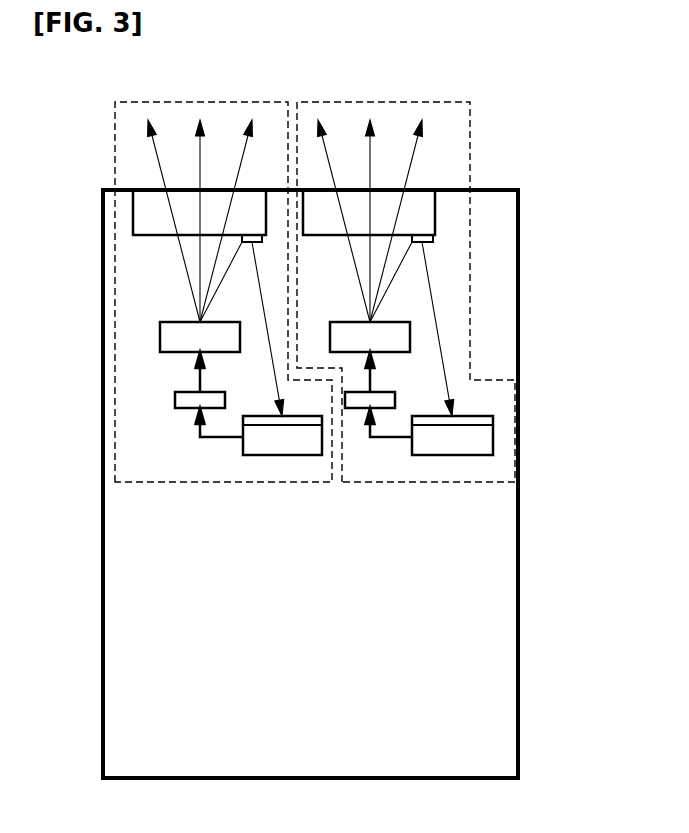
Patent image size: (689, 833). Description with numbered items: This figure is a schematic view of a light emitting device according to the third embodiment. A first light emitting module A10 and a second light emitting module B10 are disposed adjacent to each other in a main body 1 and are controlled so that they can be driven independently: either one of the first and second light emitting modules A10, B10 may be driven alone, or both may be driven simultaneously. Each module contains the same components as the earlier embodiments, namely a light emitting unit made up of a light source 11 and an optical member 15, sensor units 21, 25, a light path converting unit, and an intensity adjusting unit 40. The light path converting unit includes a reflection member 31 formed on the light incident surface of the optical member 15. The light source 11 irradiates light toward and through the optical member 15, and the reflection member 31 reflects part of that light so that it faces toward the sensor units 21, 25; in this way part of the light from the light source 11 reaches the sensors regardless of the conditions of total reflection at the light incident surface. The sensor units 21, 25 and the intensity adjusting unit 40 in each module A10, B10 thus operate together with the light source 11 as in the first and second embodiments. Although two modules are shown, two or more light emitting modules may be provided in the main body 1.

The main body 1 is at (518, 610).
The first light emitting module A10 is at (115, 153).
The second light emitting module B10 is at (470, 131).
The optical member 15 is at (435, 212).
The reflection member 31 is at (425, 242).
The light source 11 is at (410, 337).
The intensity adjusting unit 40 is at (353, 413).
The sensor unit 21 is at (493, 445).
The sensor unit 25 is at (493, 425).